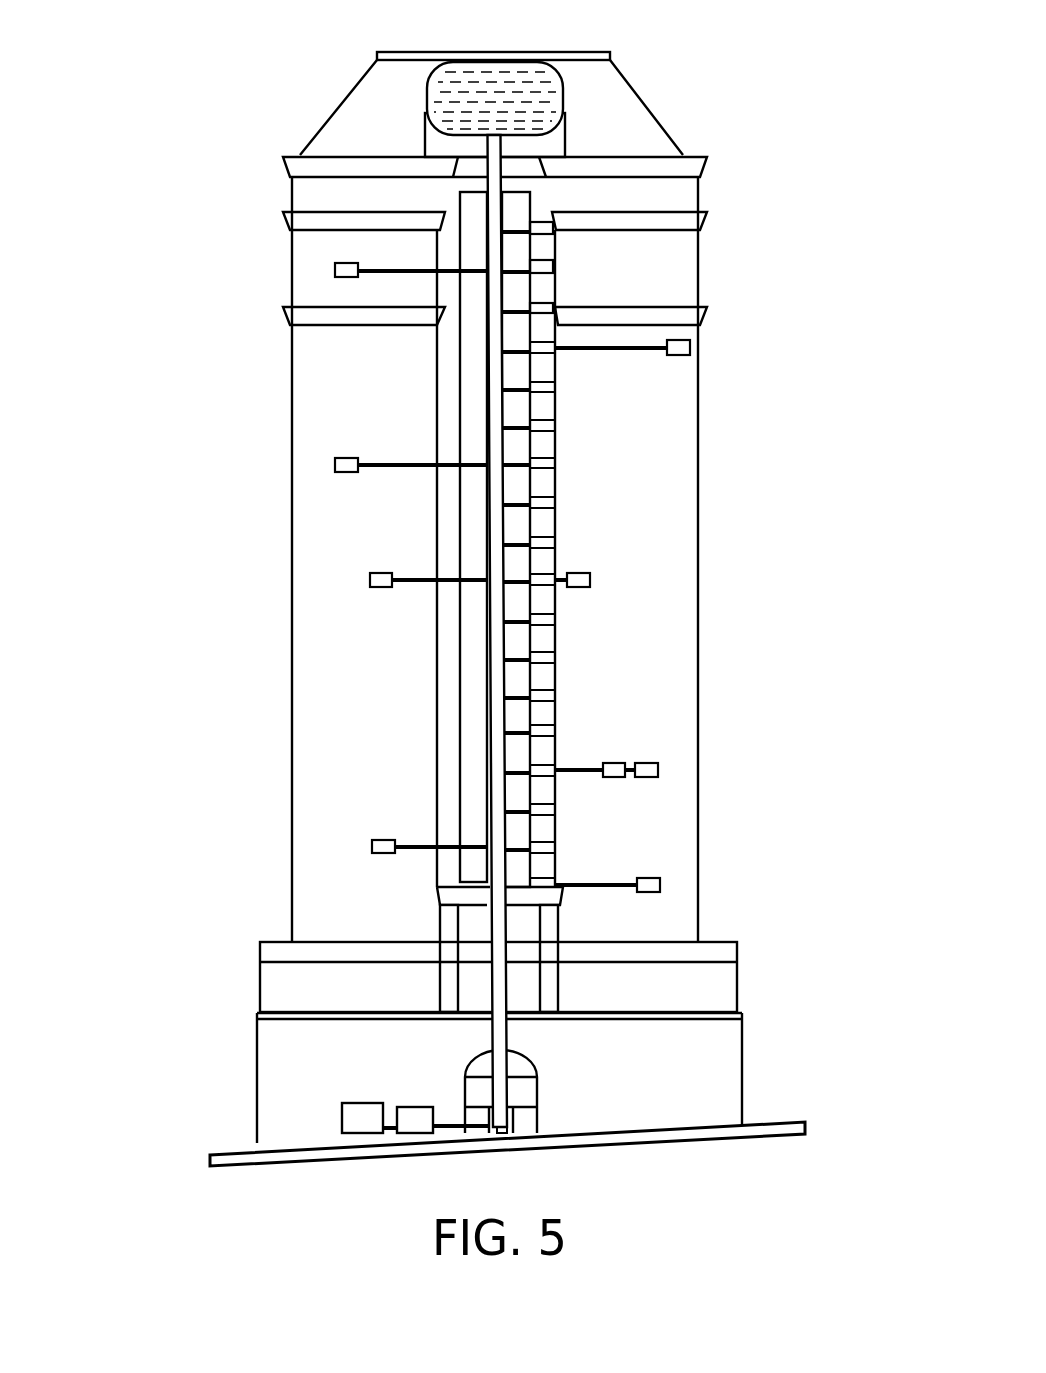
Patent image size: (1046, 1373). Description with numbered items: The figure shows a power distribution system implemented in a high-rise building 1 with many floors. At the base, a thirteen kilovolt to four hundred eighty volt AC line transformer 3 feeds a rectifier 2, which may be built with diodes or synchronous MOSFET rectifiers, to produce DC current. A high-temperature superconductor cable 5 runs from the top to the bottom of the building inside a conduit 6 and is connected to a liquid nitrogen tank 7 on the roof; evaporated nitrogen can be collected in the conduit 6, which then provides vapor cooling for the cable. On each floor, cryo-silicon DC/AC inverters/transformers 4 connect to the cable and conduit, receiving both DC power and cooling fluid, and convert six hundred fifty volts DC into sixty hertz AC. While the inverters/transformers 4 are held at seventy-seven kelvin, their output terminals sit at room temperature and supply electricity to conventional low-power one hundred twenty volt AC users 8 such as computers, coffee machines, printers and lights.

The high-rise building 1 is at (236, 486).
The rectifier 2 is at (413, 1107).
The 13 kV/480 V AC line transformer 3 is at (340, 1118).
The cryo-silicon DC/AC inverters/transformers 4 is at (555, 655).
The high-temperature superconductor cable 5 is at (488, 793).
The conduit 6 is at (462, 397).
The liquid nitrogen tank 7 is at (552, 90).
The 120 VAC users 8 is at (690, 348).